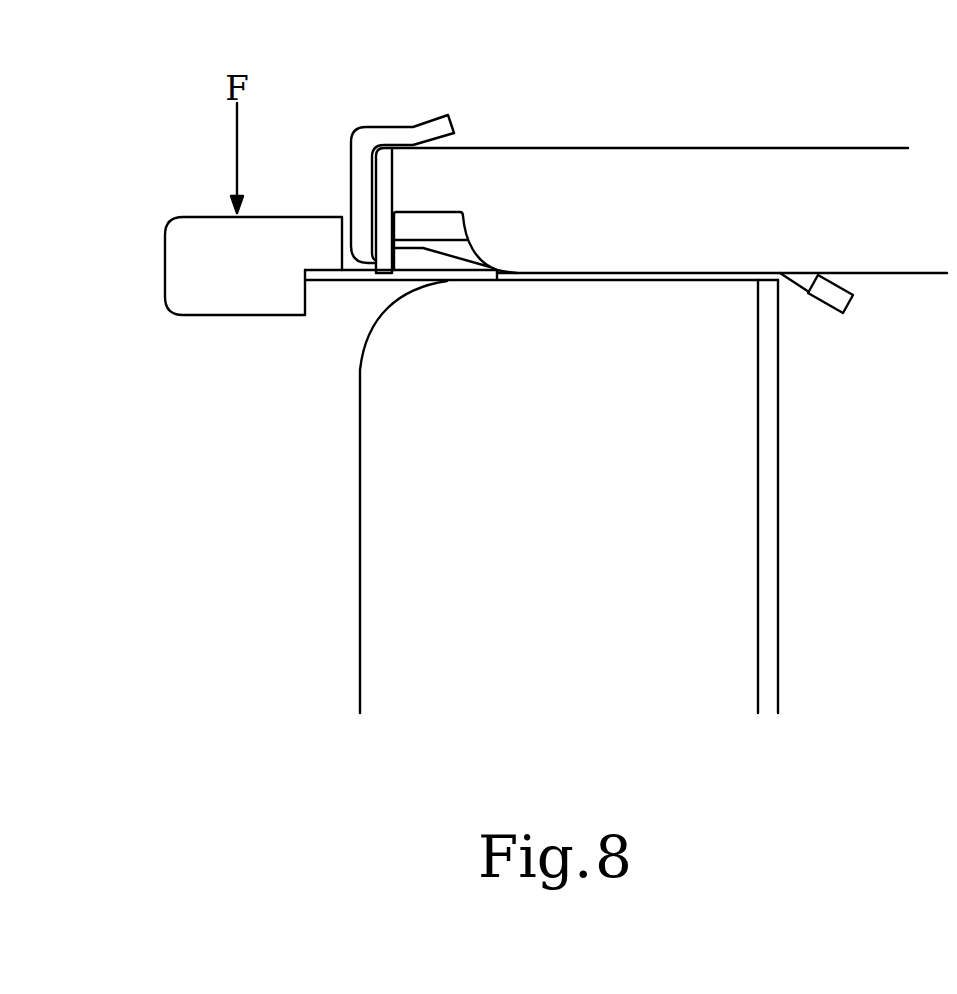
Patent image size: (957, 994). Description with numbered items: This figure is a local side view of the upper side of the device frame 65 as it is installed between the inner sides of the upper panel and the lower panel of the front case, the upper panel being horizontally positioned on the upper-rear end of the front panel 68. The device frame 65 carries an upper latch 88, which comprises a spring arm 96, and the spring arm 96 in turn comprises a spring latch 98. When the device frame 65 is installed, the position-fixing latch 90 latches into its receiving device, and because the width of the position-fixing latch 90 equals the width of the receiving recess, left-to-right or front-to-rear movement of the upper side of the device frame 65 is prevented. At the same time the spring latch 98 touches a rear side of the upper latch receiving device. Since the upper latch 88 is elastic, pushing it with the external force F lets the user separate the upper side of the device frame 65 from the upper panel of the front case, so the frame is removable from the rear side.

The device frame 65 is at (555, 533).
The front panel 68 is at (610, 158).
The upper latch 88 is at (196, 274).
The position-fixing latch 90 is at (433, 123).
The spring arm 96 is at (336, 275).
The spring latch 98 is at (418, 258).